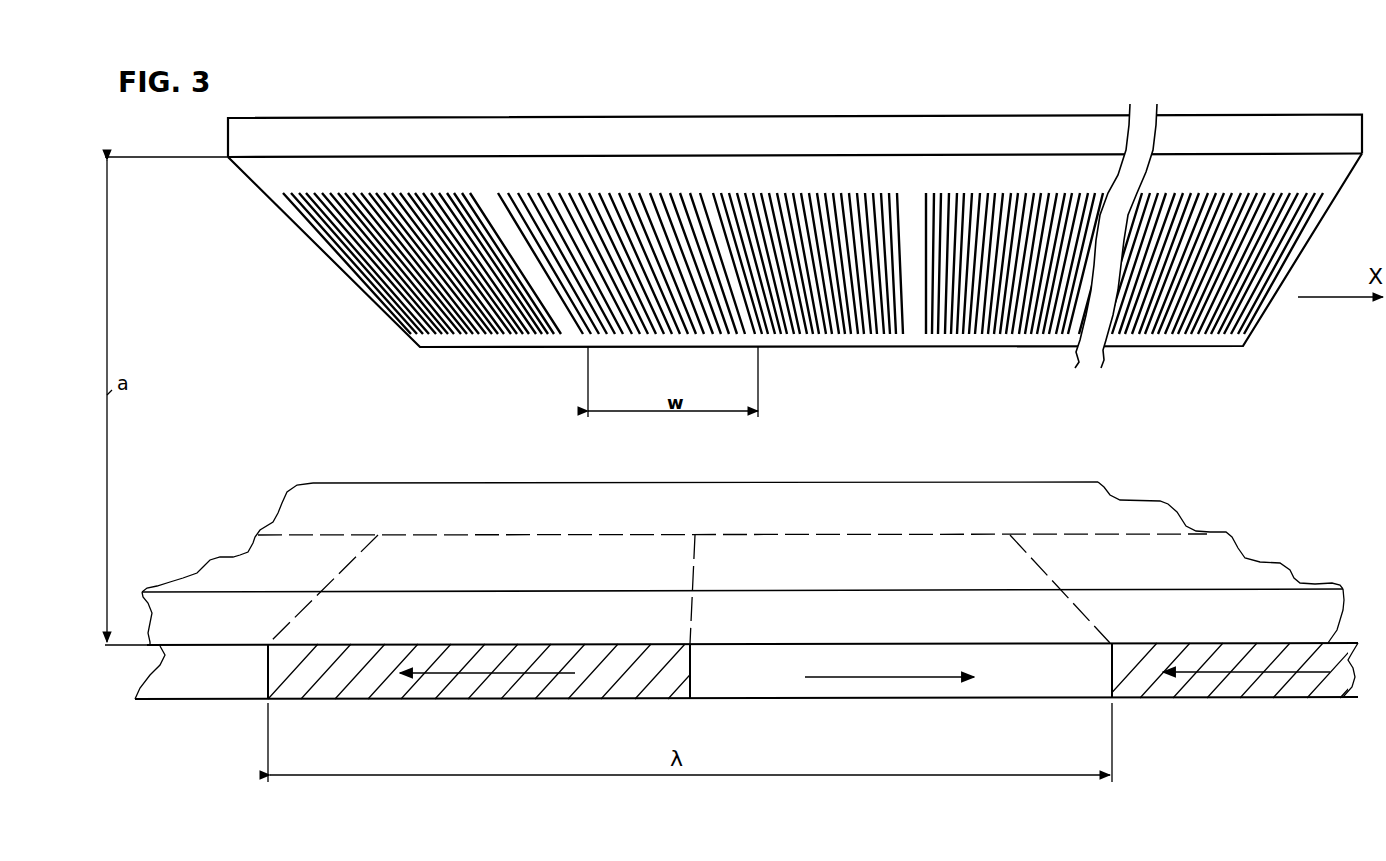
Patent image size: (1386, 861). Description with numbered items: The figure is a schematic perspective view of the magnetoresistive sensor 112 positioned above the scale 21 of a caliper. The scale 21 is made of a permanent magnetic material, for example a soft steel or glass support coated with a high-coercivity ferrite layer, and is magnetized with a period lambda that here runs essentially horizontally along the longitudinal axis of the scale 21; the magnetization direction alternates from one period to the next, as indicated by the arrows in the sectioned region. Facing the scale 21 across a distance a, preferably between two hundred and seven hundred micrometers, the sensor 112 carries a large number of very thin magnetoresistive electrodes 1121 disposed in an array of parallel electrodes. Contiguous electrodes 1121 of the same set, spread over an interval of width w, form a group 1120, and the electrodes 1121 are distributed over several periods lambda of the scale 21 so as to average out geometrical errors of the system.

The magnetoresistive sensor 112 is at (752, 220).
The group of electrodes 1120 is at (752, 251).
The magnetoresistive electrodes 1121 is at (612, 193).
The scale 21 is at (1327, 563).